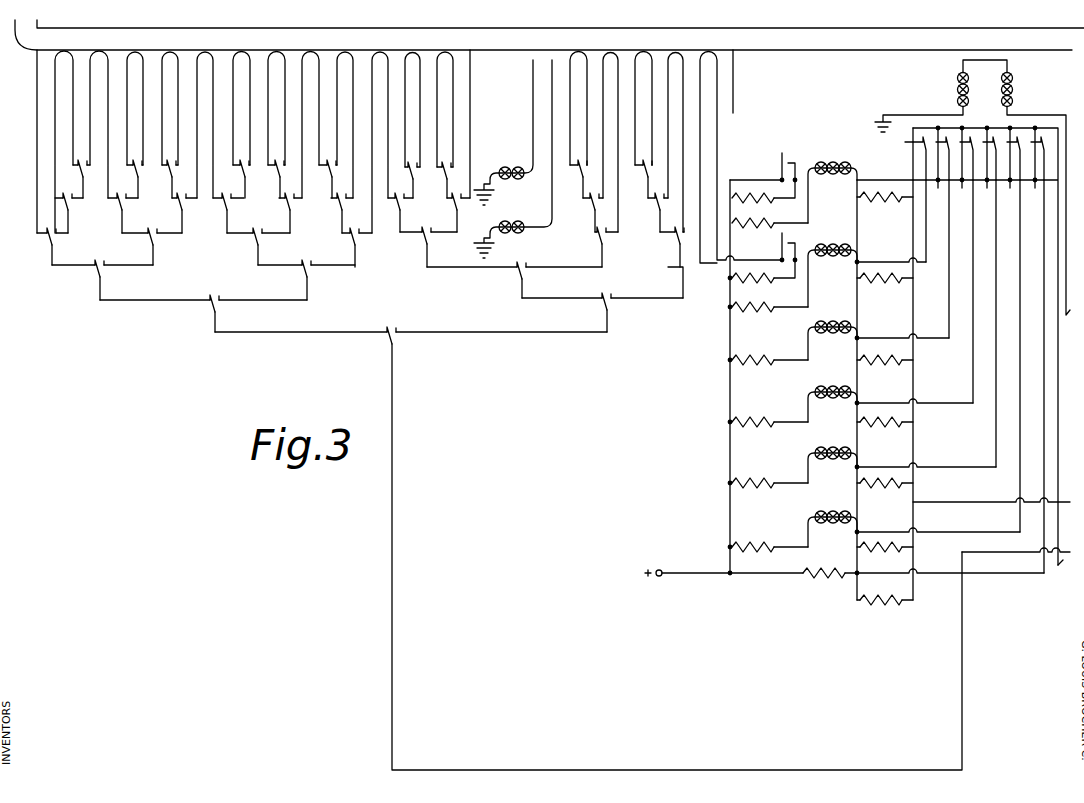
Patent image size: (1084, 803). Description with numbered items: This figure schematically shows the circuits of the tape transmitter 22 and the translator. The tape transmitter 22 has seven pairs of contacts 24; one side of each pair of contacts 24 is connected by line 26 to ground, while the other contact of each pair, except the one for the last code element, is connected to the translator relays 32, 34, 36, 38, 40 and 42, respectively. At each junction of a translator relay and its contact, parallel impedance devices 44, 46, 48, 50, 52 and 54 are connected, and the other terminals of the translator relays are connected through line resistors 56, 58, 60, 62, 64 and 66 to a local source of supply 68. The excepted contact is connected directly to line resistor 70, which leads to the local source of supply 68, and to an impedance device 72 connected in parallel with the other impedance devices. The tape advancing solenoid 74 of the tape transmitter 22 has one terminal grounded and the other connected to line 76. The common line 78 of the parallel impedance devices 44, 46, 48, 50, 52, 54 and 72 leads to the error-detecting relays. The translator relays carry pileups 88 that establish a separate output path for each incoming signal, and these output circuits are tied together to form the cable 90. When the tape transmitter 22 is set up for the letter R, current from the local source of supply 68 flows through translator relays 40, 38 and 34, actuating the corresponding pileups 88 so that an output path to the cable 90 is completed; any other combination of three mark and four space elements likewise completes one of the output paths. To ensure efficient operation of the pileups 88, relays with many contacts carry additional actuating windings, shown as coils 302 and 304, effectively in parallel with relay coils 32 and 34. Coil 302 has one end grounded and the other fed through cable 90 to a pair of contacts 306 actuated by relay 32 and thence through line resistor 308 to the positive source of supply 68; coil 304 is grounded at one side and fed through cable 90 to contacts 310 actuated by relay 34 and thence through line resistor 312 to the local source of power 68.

The tape transmitter 22 is at (997, 110).
The pairs of contacts 24 is at (905, 142).
The line 26 is at (1057, 565).
The translator relay 32 is at (838, 152).
The translator relay 34 is at (843, 235).
The translator relay 36 is at (843, 312).
The translator relay 38 is at (843, 376).
The translator relay 40 is at (843, 438).
The translator relay 42 is at (843, 503).
The parallel impedance device 44 is at (885, 214).
The parallel impedance device 46 is at (885, 295).
The parallel impedance device 48 is at (885, 372).
The parallel impedance device 50 is at (885, 434).
The parallel impedance device 52 is at (885, 496).
The parallel impedance device 54 is at (868, 549).
The line resistor 56 is at (770, 237).
The line resistor 58 is at (770, 319).
The line resistor 60 is at (770, 372).
The line resistor 62 is at (770, 435).
The line resistor 64 is at (770, 496).
The line resistor 66 is at (762, 545).
The local source of supply 68 is at (676, 568).
The line resistor 70 is at (834, 582).
The impedance device 72 is at (885, 614).
The tape advancing solenoid 74 is at (997, 66).
The line 76 is at (1061, 117).
The common line 78 is at (943, 503).
The pileups 88 is at (482, 410).
The cable 90 is at (852, 51).
The coil 302 is at (518, 152).
The coil 304 is at (518, 207).
The pair of contacts 306 is at (797, 143).
The line resistor 308 is at (763, 167).
The contacts 310 is at (797, 230).
The line resistor 312 is at (725, 268).